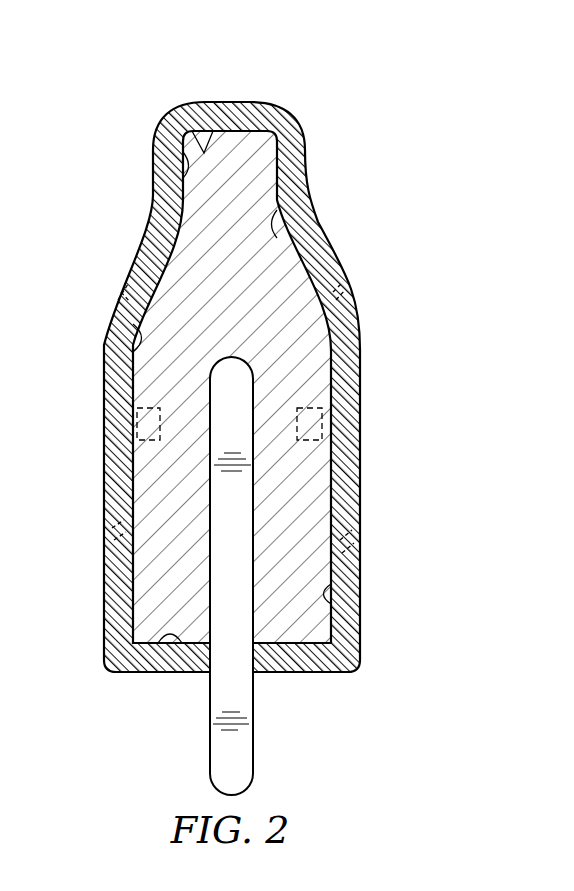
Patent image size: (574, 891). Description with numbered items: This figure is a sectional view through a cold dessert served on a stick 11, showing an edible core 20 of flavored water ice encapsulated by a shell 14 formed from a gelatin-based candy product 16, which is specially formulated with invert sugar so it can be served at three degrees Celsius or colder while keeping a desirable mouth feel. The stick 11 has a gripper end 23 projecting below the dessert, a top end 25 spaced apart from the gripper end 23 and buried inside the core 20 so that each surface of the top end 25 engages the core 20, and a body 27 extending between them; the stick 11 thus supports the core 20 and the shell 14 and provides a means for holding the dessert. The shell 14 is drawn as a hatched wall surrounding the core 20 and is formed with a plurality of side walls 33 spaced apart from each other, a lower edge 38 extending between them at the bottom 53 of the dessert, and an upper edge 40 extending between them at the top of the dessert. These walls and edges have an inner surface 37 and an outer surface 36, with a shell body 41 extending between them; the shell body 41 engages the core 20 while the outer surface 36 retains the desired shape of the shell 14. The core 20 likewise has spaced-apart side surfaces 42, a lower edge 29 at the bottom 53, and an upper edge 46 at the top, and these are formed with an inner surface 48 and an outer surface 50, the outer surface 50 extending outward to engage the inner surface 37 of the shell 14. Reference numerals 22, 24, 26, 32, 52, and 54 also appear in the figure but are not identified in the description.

The stick 11 is at (282, 770).
The shell 14 is at (328, 178).
The gelatin-based candy product 16 is at (323, 228).
The edible core 20 is at (203, 260).
The inner top corner 22 is at (281, 141).
The gripper end 23 is at (211, 752).
The bottom wall 24 is at (357, 656).
The top end 25 is at (314, 431).
The inner wall surface 26 is at (131, 384).
The body 27 is at (256, 548).
The lower edge 29 is at (165, 642).
The filling body 32 is at (256, 328).
The side walls 33 is at (361, 372).
The outer surface 36 is at (150, 212).
The inner surface 37 is at (187, 165).
The lower edge 38 is at (292, 676).
The upper edge 40 is at (228, 103).
The shell body 41 is at (339, 490).
The side surfaces 42 is at (285, 215).
The upper edge 46 is at (204, 150).
The inner surface 48 is at (332, 594).
The outer surface 50 is at (346, 502).
The embedded element 52 is at (158, 426).
The bottom 53 is at (113, 681).
The intermediate layer 54 is at (344, 458).